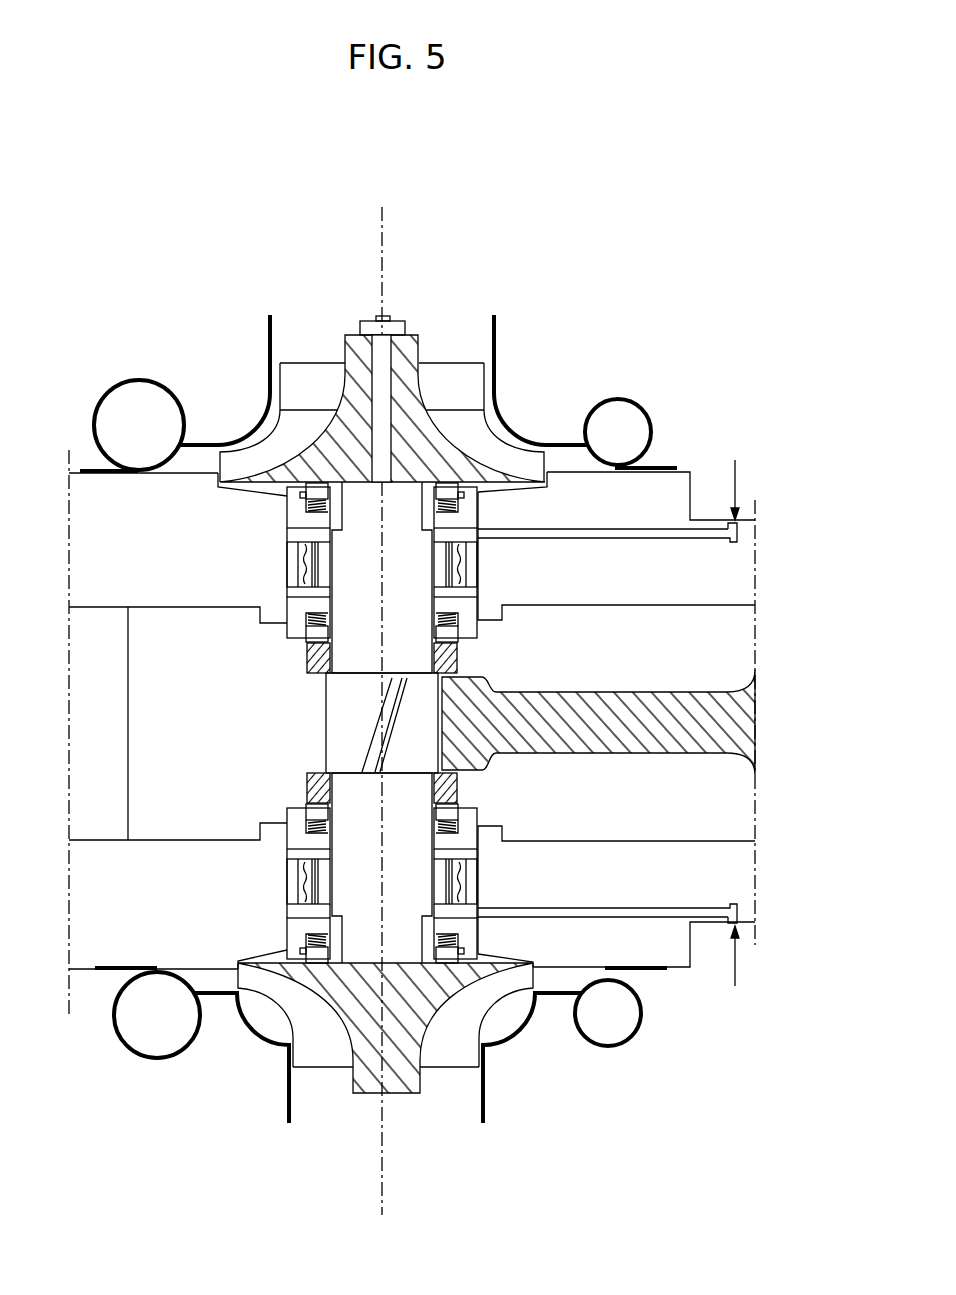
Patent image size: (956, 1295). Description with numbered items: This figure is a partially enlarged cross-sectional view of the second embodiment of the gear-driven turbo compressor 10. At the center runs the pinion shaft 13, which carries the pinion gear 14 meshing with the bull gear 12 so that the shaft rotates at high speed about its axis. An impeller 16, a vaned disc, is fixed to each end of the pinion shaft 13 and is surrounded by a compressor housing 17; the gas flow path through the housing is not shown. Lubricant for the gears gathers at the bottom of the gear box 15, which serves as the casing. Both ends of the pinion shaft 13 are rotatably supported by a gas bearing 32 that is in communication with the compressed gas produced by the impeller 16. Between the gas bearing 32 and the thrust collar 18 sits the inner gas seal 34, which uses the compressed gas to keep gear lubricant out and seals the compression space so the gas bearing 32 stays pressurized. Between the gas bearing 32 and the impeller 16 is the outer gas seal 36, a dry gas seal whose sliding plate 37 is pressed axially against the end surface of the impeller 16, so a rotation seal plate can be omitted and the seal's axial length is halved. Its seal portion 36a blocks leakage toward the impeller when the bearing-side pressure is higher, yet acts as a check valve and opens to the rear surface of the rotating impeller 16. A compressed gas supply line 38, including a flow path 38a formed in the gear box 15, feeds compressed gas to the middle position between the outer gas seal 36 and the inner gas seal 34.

The gear-driven turbo compressor 10 is at (155, 250).
The bull gear 12 is at (620, 723).
The pinion shaft 13 is at (398, 620).
The pinion gear 14 is at (340, 742).
The gear box 15 is at (125, 917).
The impeller 16 is at (337, 437).
The compressor housing 17 is at (120, 380).
The thrust collar 18 is at (307, 660).
The gas bearing 32 is at (287, 561).
The inner gas seal 34 is at (485, 628).
The outer gas seal 36 is at (478, 489).
The seal portion 36a is at (450, 482).
The sliding plate 37 is at (307, 495).
The compressed gas supply line 38 is at (712, 404).
The flow path 38a is at (632, 533).